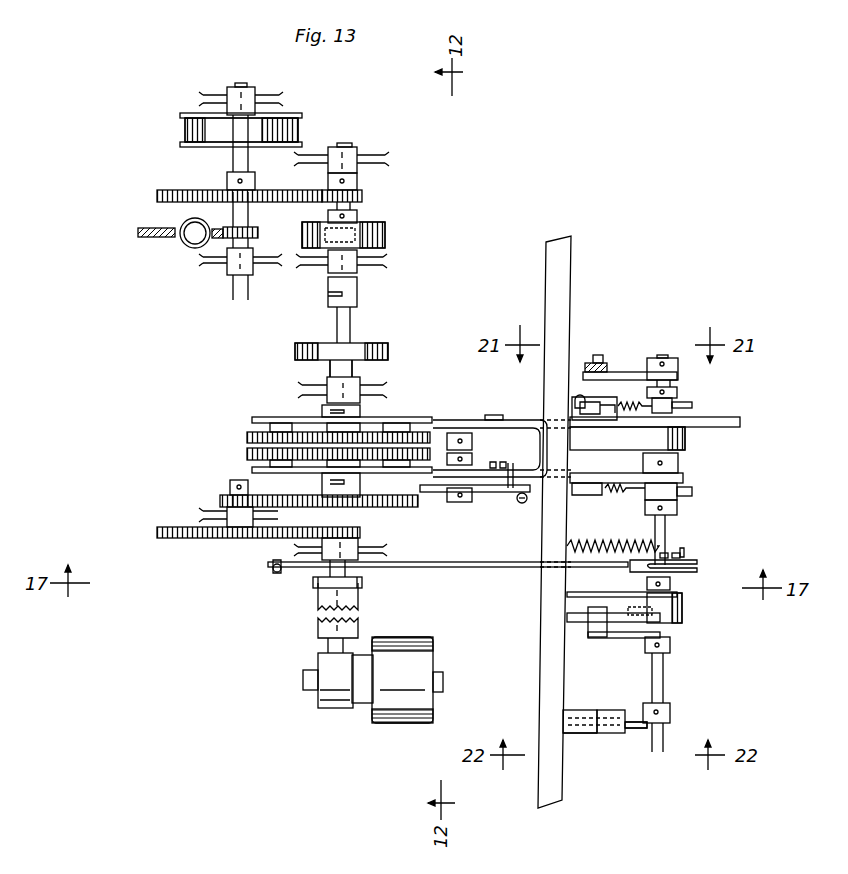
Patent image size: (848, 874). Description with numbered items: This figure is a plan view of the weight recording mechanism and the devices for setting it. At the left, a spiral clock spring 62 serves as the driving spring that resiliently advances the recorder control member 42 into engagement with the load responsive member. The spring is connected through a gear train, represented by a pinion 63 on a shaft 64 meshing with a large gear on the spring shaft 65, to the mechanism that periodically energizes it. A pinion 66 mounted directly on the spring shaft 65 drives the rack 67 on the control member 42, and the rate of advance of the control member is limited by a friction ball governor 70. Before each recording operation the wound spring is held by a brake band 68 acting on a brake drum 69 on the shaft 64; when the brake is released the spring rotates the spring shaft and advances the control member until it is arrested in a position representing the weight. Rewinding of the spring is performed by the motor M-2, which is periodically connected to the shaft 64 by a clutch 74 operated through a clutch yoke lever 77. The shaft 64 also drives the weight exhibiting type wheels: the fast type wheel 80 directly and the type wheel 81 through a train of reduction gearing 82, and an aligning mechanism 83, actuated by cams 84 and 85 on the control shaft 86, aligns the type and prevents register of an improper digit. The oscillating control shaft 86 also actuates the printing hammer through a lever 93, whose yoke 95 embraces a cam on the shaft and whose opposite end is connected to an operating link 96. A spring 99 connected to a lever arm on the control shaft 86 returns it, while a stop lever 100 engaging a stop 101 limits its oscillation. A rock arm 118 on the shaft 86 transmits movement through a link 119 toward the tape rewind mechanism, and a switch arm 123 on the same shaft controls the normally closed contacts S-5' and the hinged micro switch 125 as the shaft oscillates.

The spring shaft 65 is at (240, 83).
The spiral clock spring 62 is at (300, 130).
The shaft 64 is at (345, 145).
The pinion 63 is at (362, 196).
The friction ball governor 70 is at (308, 232).
The recorder control member 42 is at (180, 222).
The pinion 66 is at (258, 232).
The rack 67 is at (213, 244).
The brake drum 69 is at (368, 345).
The brake band 68 is at (397, 355).
The type wheel 80 is at (247, 437).
The type wheel 81 is at (247, 454).
The train of reduction gearing 82 is at (290, 540).
The lever 93 is at (418, 562).
The operating link 96 is at (280, 573).
The clutch yoke lever 77 is at (362, 583).
The clutch 74 is at (358, 600).
The motor M-2 is at (395, 717).
The aligning mechanism 83 is at (500, 493).
The link 119 is at (598, 355).
The rock arm 118 is at (628, 372).
The control shaft 86 is at (665, 350).
The cam 85 is at (692, 405).
The cam 84 is at (692, 493).
The spring 99 is at (625, 545).
The yoke 95 is at (697, 565).
The stop 101 is at (570, 620).
The stop lever 100 is at (598, 637).
The micro switch 125 is at (578, 712).
The contacts S-5' is at (587, 752).
The switch arm 123 is at (633, 728).